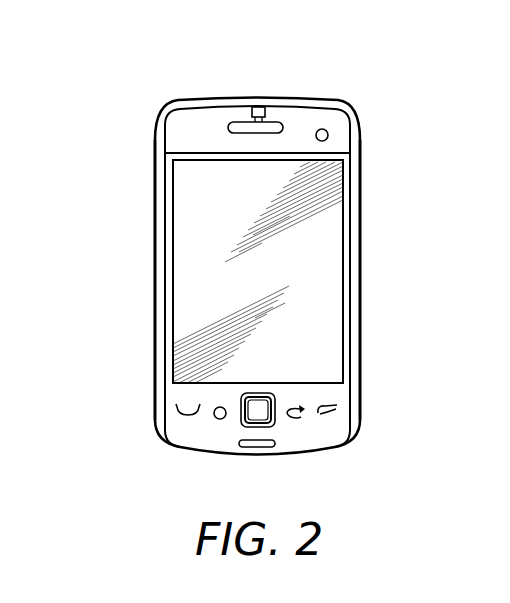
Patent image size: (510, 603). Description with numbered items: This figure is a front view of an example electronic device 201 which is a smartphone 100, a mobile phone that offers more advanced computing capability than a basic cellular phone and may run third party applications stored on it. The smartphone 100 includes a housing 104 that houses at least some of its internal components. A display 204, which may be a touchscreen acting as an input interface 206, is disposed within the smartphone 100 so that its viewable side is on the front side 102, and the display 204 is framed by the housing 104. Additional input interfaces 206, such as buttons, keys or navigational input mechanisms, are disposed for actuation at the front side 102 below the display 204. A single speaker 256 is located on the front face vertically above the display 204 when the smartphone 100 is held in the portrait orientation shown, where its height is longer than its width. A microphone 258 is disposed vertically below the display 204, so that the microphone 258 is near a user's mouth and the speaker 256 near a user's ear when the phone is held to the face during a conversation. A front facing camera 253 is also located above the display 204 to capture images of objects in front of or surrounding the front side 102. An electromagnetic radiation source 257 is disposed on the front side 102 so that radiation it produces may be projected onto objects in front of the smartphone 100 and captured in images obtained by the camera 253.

The smartphone 100 is at (145, 95).
The electronic device 201 is at (190, 62).
The front side 102 is at (172, 396).
The housing 104 is at (362, 170).
The display 204 is at (171, 216).
The input interface 206 is at (171, 296).
The front facing camera 253 is at (254, 107).
The speaker 256 is at (277, 121).
The electromagnetic radiation source 257 is at (328, 134).
The microphone 258 is at (252, 448).